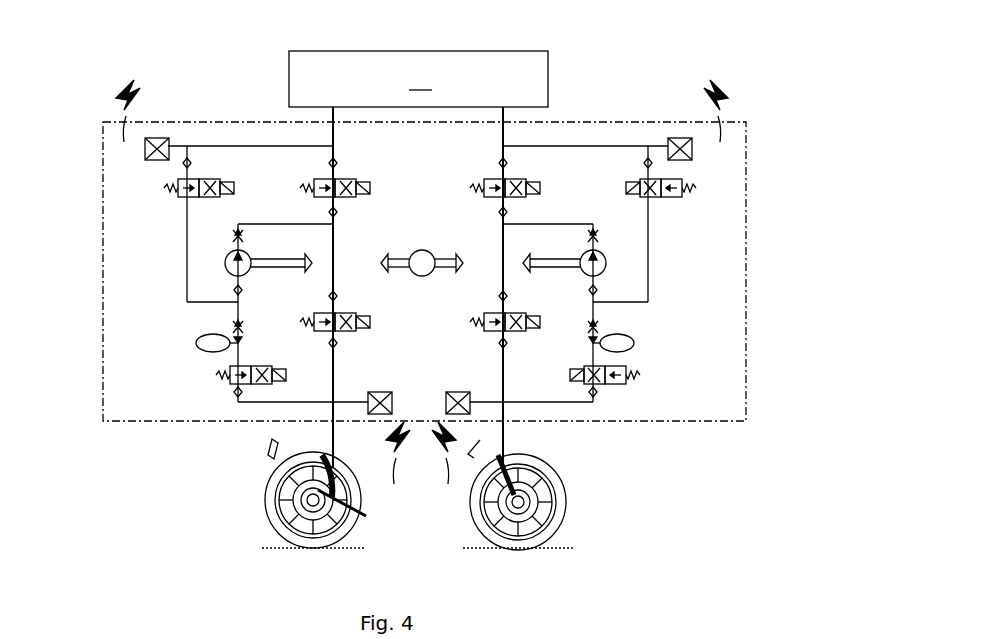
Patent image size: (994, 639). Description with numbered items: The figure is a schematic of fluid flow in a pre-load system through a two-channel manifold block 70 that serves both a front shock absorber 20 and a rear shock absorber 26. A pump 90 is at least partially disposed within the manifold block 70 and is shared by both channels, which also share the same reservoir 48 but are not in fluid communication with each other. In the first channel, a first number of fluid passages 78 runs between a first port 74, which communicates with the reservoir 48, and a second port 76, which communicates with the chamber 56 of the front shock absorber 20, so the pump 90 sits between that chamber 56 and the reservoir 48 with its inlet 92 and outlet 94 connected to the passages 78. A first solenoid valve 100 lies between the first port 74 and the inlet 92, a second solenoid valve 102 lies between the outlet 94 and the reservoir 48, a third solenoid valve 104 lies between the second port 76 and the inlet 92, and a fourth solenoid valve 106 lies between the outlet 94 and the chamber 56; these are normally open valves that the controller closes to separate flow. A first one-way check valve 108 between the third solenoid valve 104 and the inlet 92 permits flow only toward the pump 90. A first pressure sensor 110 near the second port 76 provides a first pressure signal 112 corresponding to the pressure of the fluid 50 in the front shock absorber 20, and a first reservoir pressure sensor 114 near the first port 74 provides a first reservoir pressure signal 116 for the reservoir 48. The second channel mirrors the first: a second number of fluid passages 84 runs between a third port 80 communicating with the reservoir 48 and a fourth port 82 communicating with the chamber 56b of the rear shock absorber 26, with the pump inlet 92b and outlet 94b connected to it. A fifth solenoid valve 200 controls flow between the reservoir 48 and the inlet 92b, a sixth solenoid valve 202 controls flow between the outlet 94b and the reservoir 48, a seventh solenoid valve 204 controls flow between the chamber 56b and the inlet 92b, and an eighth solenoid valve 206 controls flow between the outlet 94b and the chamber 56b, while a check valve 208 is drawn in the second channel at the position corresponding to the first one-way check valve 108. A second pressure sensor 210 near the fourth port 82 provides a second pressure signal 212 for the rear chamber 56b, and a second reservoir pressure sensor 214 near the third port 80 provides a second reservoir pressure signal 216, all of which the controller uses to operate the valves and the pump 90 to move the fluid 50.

The front shock absorber 20 is at (522, 500).
The rear shock absorber 26 is at (306, 498).
The reservoir 48 is at (372, 51).
The fluid 50 is at (418, 79).
The chamber 56 is at (512, 482).
The chamber 56b is at (316, 470).
The manifold block 70 is at (752, 220).
The first port 74 is at (514, 121).
The second port 76 is at (513, 422).
The first number of fluid passages 78 is at (625, 278).
The third port 80 is at (324, 121).
The fourth port 82 is at (320, 422).
The second number of fluid passages 84 is at (239, 288).
The pump 90 is at (422, 248).
The inlet 92 is at (581, 279).
The inlet 92b is at (250, 279).
The outlet 94 is at (580, 243).
The outlet 94b is at (250, 243).
The first solenoid valve 100 is at (714, 190).
The second solenoid valve 102 is at (538, 170).
The third solenoid valve 104 is at (650, 380).
The fourth solenoid valve 106 is at (522, 340).
The first one-way check valve 108 is at (612, 325).
The first pressure sensor 110 is at (457, 386).
The first pressure signal 112 is at (443, 463).
The first reservoir pressure sensor 114 is at (696, 144).
The first reservoir pressure signal 116 is at (714, 70).
The fifth solenoid valve 200 is at (148, 190).
The sixth solenoid valve 202 is at (368, 170).
The seventh solenoid valve 204 is at (198, 380).
The eighth solenoid valve 206 is at (372, 304).
The front accumulator check valve 208 is at (222, 325).
The second pressure sensor 210 is at (382, 386).
The second pressure signal 212 is at (395, 473).
The second reservoir pressure sensor 214 is at (134, 144).
The second reservoir pressure signal 216 is at (126, 86).